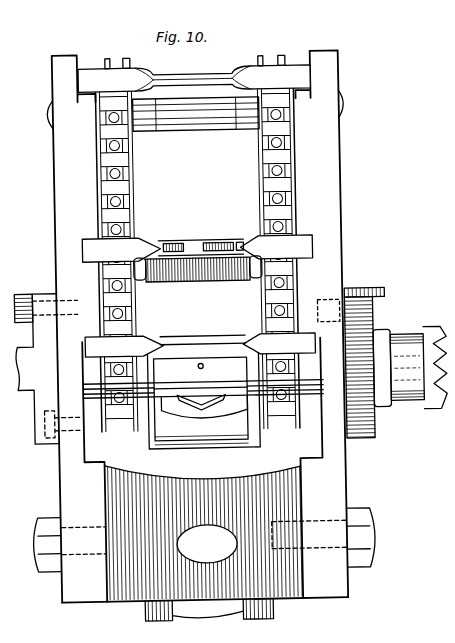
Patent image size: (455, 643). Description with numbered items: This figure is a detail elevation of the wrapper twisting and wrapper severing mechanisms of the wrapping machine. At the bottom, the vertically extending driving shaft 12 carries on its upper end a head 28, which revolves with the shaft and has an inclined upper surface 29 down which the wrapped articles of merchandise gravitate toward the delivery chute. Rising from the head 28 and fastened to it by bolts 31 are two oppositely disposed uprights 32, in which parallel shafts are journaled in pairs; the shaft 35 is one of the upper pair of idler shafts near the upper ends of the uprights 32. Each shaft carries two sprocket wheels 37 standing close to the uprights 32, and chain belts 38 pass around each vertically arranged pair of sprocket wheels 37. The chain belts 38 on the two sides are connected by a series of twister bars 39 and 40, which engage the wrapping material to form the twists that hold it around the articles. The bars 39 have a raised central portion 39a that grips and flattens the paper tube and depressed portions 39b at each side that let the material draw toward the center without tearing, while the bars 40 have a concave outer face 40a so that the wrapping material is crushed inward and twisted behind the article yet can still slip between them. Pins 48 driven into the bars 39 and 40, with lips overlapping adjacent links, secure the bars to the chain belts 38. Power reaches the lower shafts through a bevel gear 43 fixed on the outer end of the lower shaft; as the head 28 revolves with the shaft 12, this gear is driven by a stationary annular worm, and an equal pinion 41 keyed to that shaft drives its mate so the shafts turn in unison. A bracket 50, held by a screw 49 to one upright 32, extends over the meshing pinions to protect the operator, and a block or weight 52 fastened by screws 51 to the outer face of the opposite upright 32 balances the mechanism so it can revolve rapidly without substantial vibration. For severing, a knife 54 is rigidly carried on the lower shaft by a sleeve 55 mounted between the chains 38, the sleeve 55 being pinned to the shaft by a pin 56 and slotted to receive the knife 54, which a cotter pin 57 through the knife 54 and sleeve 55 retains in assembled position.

The shaft 12 is at (207, 543).
The head 28 is at (125, 602).
The inclined upper surface 29 is at (205, 530).
The bolts 31 is at (40, 565).
The uprights 32 is at (57, 210).
The shaft 35 is at (46, 112).
The sprocket wheels 37 is at (136, 151).
The chain belts 38 is at (137, 207).
The twister bars 39 is at (305, 250).
The raised central portion 39a is at (200, 247).
The depressed portions 39b is at (240, 247).
The twister bars 40 is at (228, 73).
The concave outer face 40a is at (195, 336).
The pinion 41 is at (371, 333).
The bevel gear 43 is at (433, 336).
The pins 48 is at (143, 278).
The screw 49 is at (315, 310).
The bracket 50 is at (378, 298).
The screws 51 is at (46, 291).
The block or weight 52 is at (37, 369).
The knife 54 is at (220, 437).
The sleeve 55 is at (204, 399).
The pin 56 is at (202, 364).
The cotter pin 57 is at (200, 400).